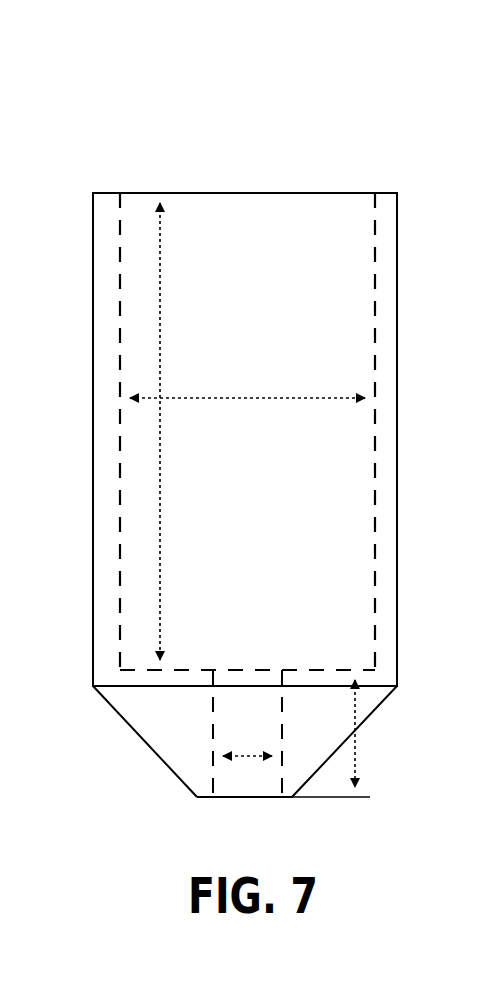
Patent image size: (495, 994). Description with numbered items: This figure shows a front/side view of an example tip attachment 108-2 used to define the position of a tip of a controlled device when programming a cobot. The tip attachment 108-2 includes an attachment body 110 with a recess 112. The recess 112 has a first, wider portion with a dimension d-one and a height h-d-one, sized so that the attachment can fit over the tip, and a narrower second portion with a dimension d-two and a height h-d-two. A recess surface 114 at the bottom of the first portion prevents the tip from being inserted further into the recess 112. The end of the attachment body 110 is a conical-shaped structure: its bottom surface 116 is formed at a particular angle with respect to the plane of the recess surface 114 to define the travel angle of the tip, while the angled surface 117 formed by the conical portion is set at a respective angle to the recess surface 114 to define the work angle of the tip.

The tip attachment 108-2 is at (196, 56).
The attachment body 110 is at (381, 640).
The recess 112 is at (256, 451).
The recess surface 114 is at (186, 668).
The angled surface 117 is at (163, 751).
The bottom surface 116 is at (243, 799).